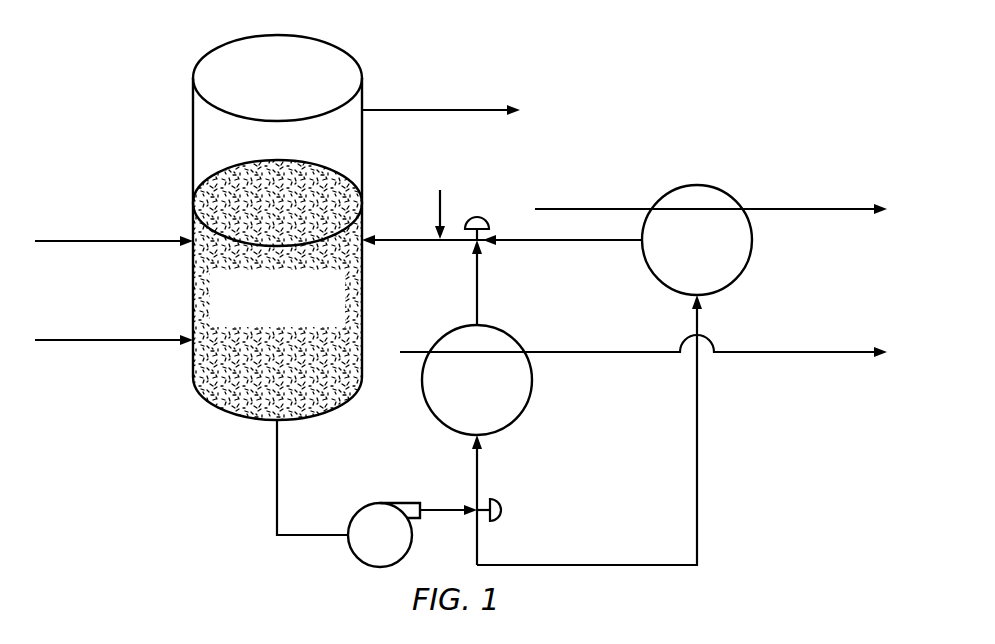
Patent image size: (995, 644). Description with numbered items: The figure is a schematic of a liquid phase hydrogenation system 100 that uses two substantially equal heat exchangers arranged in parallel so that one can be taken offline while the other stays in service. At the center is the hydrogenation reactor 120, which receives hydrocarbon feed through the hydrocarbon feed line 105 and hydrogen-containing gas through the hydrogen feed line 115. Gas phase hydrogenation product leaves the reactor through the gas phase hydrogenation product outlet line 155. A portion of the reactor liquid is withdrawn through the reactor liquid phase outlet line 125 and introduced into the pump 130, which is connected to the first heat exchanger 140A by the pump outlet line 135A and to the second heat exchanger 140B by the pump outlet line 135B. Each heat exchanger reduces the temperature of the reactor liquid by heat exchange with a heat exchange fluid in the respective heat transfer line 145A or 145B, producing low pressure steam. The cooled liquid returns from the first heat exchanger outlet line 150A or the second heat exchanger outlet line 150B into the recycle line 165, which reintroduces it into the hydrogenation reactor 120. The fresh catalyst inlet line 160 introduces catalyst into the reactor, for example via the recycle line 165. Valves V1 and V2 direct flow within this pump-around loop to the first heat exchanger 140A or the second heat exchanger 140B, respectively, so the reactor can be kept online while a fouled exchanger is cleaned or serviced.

The hydrogenation system 100 is at (748, 90).
The hydrocarbon feed line 105 is at (112, 218).
The hydrogen feed line 115 is at (112, 318).
The hydrogenation reactor 120 is at (193, 97).
The reactor liquid phase outlet line 125 is at (277, 453).
The pump 130 is at (357, 563).
The pump outlet line 135A is at (483, 465).
The pump outlet line 135B is at (700, 448).
The first heat exchanger 140A is at (533, 390).
The second heat exchanger 140B is at (752, 262).
The heat transfer line 145A is at (800, 355).
The heat transfer line 145B is at (800, 212).
The first heat exchanger outlet line 150A is at (480, 288).
The second heat exchanger outlet line 150B is at (545, 243).
The gas phase hydrogenation product outlet line 155 is at (455, 83).
The fresh catalyst inlet line 160 is at (450, 165).
The recycle line 165 is at (403, 246).
The valve V1 is at (460, 500).
The valve V2 is at (491, 225).